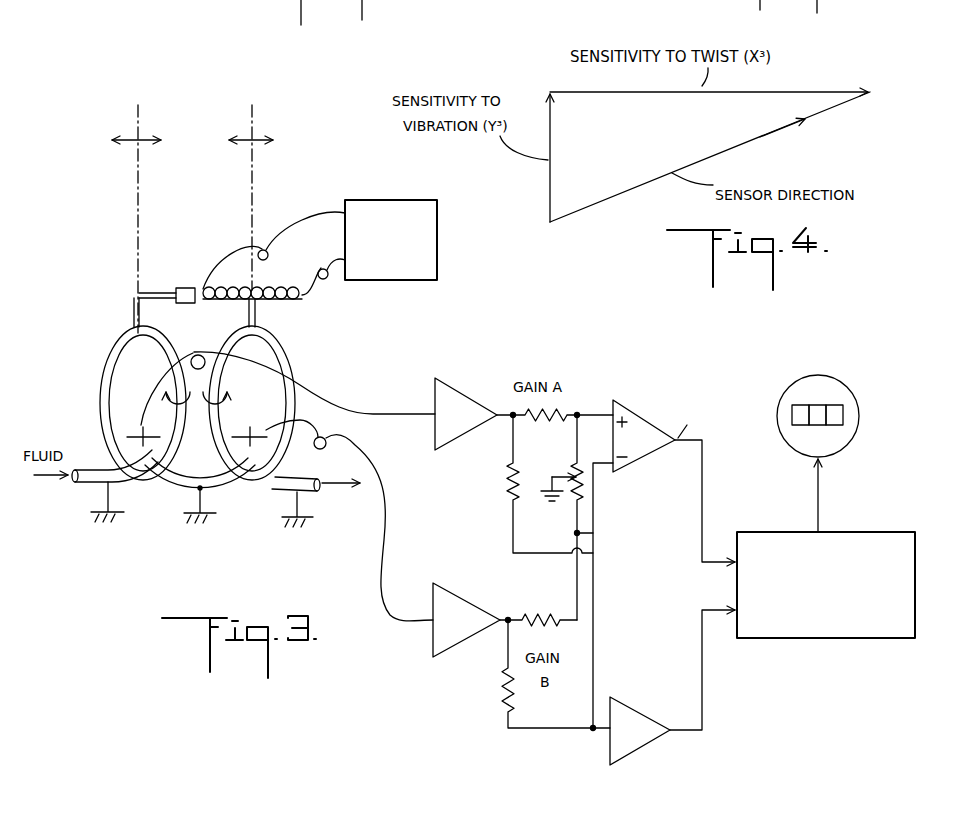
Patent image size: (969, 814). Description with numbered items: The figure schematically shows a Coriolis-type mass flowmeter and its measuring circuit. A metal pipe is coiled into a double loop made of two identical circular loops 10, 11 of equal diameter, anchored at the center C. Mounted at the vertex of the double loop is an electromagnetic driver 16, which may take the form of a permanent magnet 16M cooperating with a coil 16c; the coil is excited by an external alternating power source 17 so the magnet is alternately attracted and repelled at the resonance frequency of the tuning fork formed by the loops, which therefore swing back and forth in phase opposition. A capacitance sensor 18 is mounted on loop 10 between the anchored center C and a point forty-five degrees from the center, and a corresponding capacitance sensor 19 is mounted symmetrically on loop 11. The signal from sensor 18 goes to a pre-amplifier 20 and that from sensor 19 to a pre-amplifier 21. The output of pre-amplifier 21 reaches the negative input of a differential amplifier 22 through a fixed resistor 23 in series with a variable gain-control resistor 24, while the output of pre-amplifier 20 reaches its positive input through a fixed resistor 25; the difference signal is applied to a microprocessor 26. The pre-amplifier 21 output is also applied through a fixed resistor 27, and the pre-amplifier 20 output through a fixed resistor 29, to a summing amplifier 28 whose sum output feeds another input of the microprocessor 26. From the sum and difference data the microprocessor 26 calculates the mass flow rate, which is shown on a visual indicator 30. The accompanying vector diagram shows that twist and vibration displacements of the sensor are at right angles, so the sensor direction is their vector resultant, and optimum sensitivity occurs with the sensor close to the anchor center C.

The circular loop 10 is at (114, 349).
The circular loop 11 is at (278, 342).
The electromagnetic driver 16 is at (205, 283).
The permanent magnet 16M is at (184, 287).
The coil 16c is at (283, 289).
The alternating power source 17 is at (437, 240).
The capacitance sensor 18 is at (153, 446).
The capacitance sensor 19 is at (250, 428).
The pre-amplifier 20 is at (450, 385).
The pre-amplifier 21 is at (448, 595).
The differential amplifier 22 is at (641, 456).
The fixed resistor 23 is at (540, 612).
The variable gain-control resistor 24 is at (570, 501).
The fixed resistor 25 is at (555, 421).
The microprocessor 26 is at (883, 540).
The fixed resistor 27 is at (500, 693).
The summing amplifier 28 is at (636, 713).
The fixed resistor 29 is at (507, 493).
The visual indicator 30 is at (851, 390).
The anchored center C is at (205, 490).